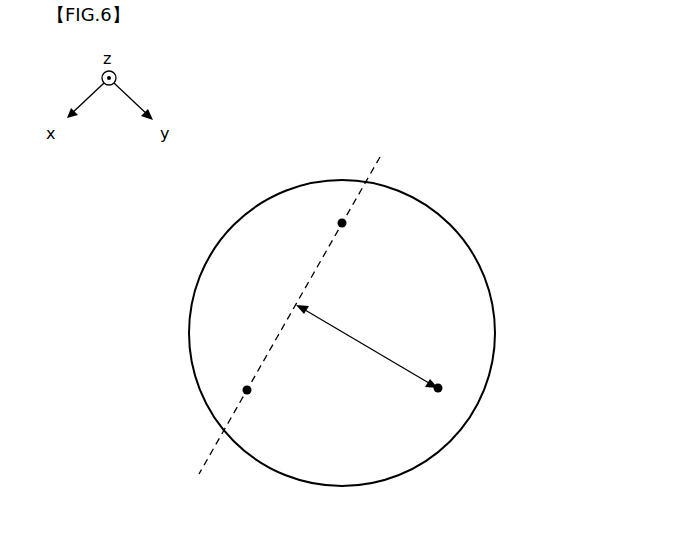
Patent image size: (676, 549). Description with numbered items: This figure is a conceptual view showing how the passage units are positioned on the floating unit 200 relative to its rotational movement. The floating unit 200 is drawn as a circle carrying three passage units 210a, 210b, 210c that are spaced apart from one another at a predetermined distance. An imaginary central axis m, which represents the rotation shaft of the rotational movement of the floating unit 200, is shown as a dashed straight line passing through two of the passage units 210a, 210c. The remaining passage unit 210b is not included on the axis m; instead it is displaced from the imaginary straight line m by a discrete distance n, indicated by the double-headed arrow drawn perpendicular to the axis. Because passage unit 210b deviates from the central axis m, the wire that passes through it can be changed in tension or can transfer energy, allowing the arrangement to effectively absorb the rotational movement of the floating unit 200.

The floating unit 200 is at (467, 242).
The passage unit 210a is at (242, 390).
The passage unit 210b is at (440, 390).
The passage unit 210c is at (371, 180).
The imaginary central axis m is at (208, 457).
The discrete distance n is at (403, 362).